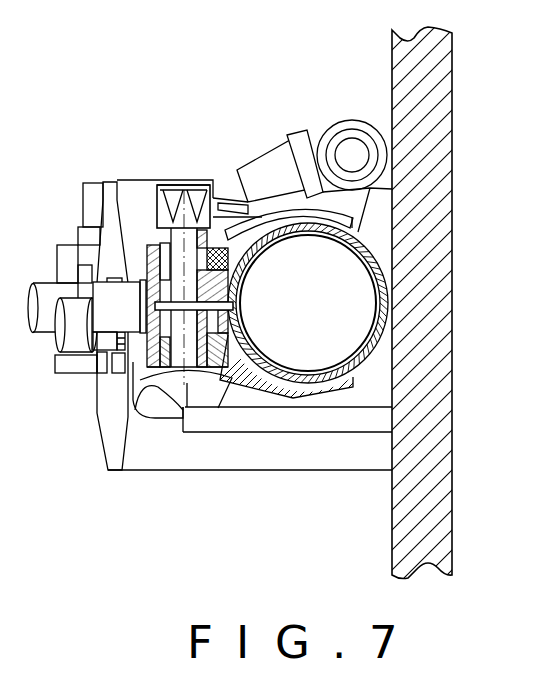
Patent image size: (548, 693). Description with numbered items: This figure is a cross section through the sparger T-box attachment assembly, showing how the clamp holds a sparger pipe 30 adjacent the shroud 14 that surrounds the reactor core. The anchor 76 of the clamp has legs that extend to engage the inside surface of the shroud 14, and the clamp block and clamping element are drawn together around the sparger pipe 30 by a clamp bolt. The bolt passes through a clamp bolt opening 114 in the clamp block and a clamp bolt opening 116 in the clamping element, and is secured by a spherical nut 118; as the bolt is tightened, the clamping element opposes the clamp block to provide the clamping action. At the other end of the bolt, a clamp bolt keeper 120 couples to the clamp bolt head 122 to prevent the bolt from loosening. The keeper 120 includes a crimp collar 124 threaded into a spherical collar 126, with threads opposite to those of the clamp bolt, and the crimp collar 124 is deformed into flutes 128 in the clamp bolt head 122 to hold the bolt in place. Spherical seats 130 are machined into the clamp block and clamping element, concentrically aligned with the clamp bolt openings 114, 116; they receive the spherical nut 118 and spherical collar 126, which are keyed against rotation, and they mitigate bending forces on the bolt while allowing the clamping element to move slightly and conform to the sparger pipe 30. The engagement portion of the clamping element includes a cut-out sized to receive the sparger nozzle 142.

The shroud 14 is at (392, 510).
The sparger pipe 30 is at (387, 346).
The anchor 76 is at (118, 458).
The clamp bolt opening 114 is at (215, 337).
The clamp bolt opening 116 is at (232, 297).
The spherical nut 118 is at (167, 361).
The clamp bolt keeper 120 is at (217, 181).
The clamp bolt head 122 is at (190, 187).
The crimp collar 124 is at (165, 215).
The spherical collar 126 is at (245, 258).
The flutes 128 is at (195, 192).
The spherical seat 130 is at (238, 292).
The sparger nozzle 142 is at (310, 135).